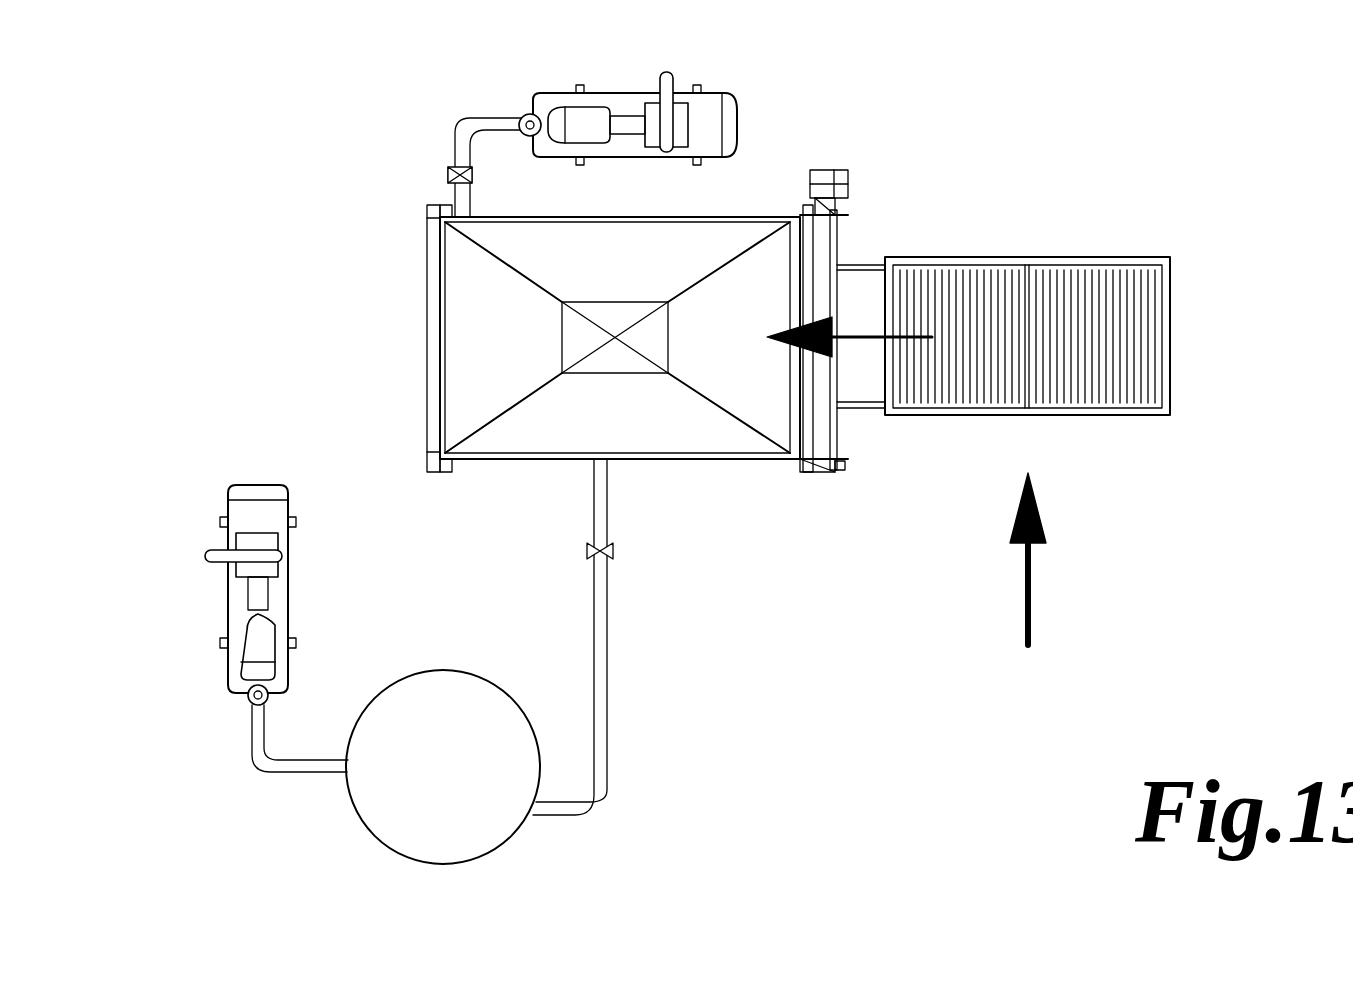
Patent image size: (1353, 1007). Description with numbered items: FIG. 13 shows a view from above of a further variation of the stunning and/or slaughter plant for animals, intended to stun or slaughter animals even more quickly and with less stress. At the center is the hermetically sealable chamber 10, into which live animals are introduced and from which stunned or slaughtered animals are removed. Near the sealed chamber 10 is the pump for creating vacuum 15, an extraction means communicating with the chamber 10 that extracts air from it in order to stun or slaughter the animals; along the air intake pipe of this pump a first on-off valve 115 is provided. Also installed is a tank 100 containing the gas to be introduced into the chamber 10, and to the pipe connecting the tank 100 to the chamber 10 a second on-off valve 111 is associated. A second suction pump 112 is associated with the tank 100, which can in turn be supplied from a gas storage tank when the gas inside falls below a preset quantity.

The hermetically sealable chamber 10 is at (482, 342).
The pump for creating vacuum 15 is at (712, 95).
The first on-off valve 115 is at (448, 175).
The second on-off valve 111 is at (615, 551).
The second suction pump 112 is at (225, 603).
The tank 100 is at (360, 815).